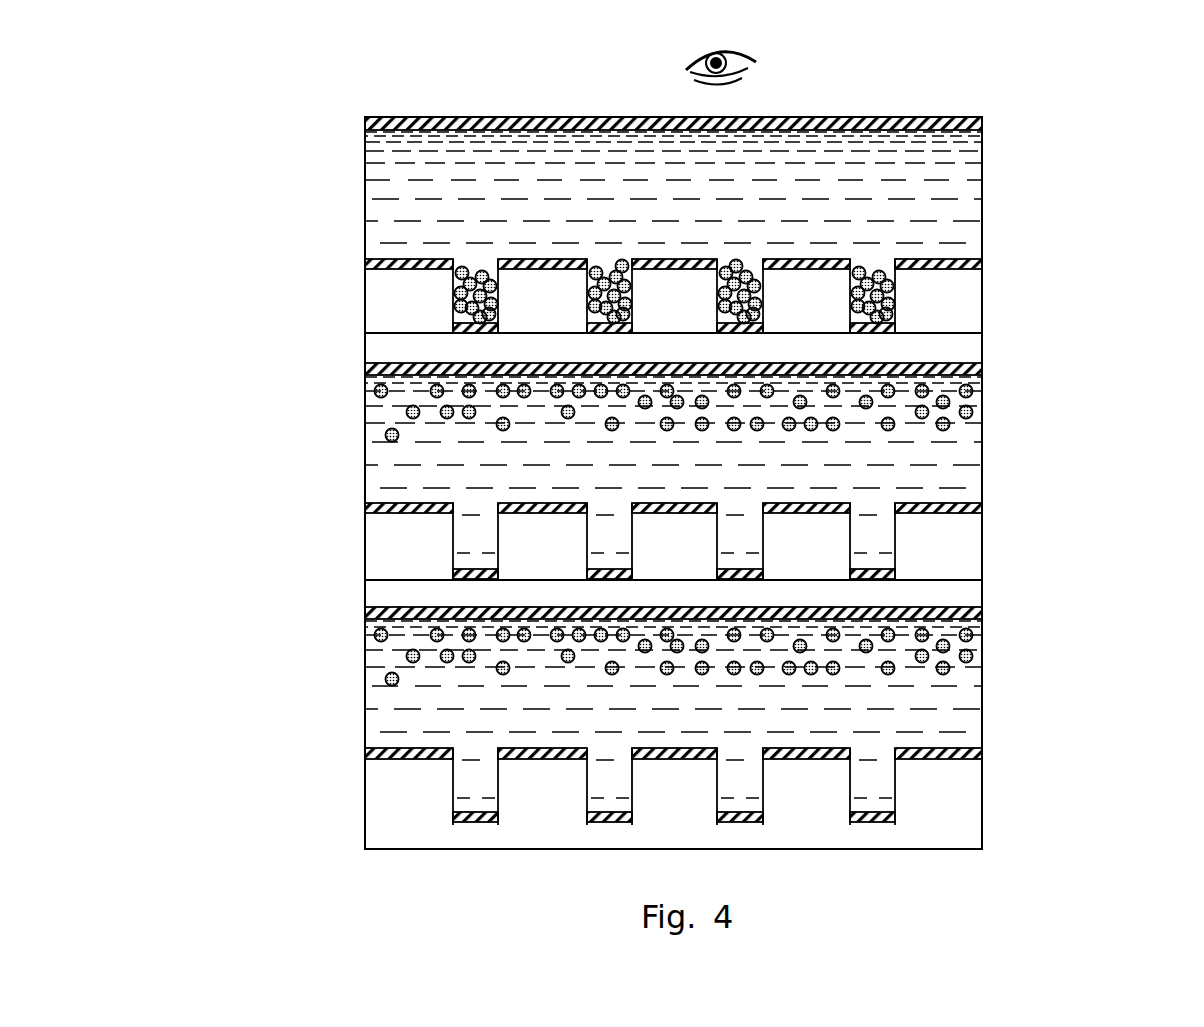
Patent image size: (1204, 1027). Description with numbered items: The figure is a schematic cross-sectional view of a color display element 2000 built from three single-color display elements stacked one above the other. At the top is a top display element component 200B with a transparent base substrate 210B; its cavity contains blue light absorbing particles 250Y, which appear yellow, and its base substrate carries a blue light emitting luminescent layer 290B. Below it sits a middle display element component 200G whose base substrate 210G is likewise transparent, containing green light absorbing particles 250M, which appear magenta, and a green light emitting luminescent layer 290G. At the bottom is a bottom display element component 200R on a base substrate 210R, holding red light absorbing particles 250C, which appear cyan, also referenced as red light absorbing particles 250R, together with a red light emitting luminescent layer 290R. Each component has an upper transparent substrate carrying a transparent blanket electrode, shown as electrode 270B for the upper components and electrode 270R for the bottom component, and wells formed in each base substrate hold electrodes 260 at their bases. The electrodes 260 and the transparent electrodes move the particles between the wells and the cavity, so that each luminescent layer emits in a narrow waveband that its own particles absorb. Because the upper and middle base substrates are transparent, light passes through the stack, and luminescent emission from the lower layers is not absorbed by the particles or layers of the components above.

The color display element 2000 is at (250, 182).
The electrode 270B is at (985, 127).
The top display element component 200B is at (1033, 178).
The blue light emitting luminescent layer 290B is at (622, 263).
The blue light absorbing particles 250Y is at (583, 293).
The transparent base substrate 210B is at (978, 340).
The green light absorbing particles 250M is at (468, 393).
The middle display element component 200G is at (1043, 458).
The green light emitting luminescent layer 290G is at (628, 507).
The base substrate 210G is at (978, 595).
The electrode 270R is at (983, 614).
The red light absorbing particles 250C is at (468, 656).
The bottom display element component 200R is at (1015, 690).
The red light emitting luminescent layer 290R is at (497, 747).
The red light absorbing particles 250R is at (845, 749).
The base substrate 210R is at (975, 834).
The electrodes 260 is at (600, 823).